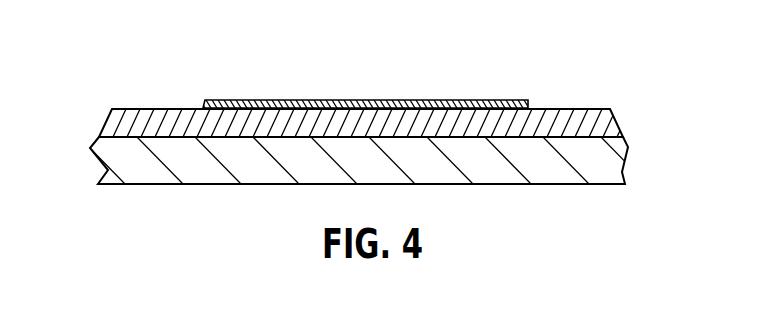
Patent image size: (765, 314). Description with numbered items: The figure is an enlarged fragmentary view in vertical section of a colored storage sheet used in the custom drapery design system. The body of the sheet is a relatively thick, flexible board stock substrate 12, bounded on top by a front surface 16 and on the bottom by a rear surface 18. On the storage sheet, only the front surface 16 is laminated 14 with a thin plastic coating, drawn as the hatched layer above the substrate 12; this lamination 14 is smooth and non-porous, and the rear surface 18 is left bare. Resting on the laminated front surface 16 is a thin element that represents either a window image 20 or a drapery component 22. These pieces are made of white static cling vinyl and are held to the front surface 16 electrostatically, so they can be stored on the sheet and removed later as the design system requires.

The board stock substrate 12 is at (602, 160).
The plastic film lamination 14 is at (612, 118).
The front surface 16 is at (590, 110).
The rear surface 18 is at (363, 206).
The window image 20 is at (290, 83).
The drapery component 22 is at (217, 105).